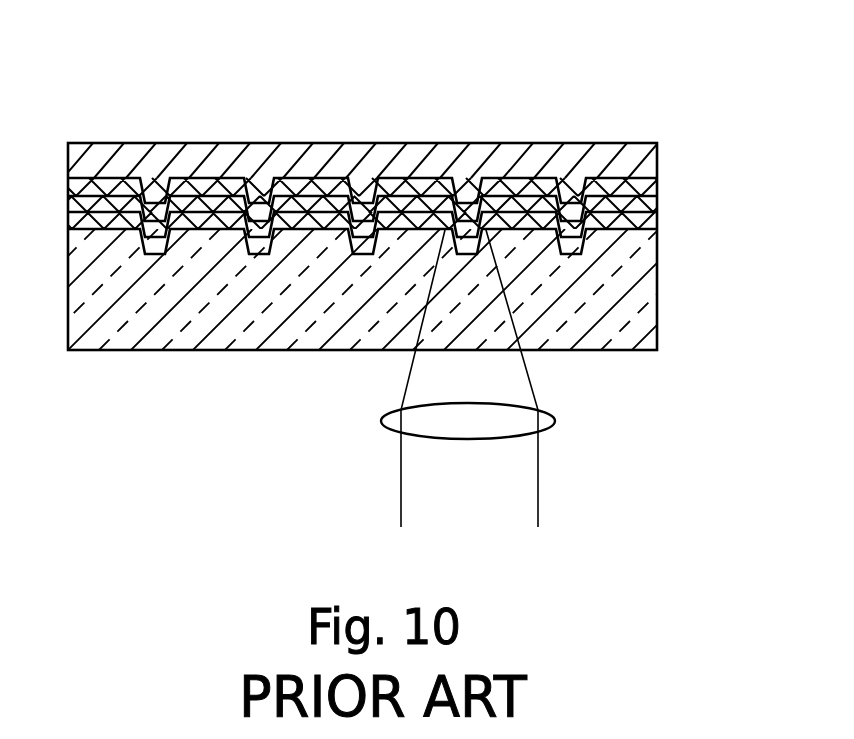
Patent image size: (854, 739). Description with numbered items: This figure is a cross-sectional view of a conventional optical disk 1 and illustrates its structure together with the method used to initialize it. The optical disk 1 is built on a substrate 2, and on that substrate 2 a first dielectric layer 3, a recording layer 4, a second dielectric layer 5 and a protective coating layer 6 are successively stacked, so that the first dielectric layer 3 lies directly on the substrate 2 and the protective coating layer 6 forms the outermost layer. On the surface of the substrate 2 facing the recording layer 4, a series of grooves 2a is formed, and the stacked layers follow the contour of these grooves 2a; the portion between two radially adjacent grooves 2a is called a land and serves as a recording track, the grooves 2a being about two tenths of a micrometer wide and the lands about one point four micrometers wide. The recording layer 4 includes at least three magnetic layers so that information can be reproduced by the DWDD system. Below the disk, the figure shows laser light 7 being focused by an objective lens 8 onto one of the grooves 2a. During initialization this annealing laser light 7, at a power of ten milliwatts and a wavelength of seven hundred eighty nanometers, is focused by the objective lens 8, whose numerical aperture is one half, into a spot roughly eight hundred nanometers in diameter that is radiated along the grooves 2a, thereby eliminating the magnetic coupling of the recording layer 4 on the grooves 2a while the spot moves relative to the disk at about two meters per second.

The optical disk 1 is at (79, 80).
The substrate 2 is at (657, 300).
The grooves 2a is at (160, 268).
The first dielectric layer 3 is at (657, 222).
The recording layer 4 is at (657, 202).
The second dielectric layer 5 is at (657, 184).
The protective coating layer 6 is at (657, 157).
The laser light 7 is at (538, 493).
The objective lens 8 is at (554, 420).